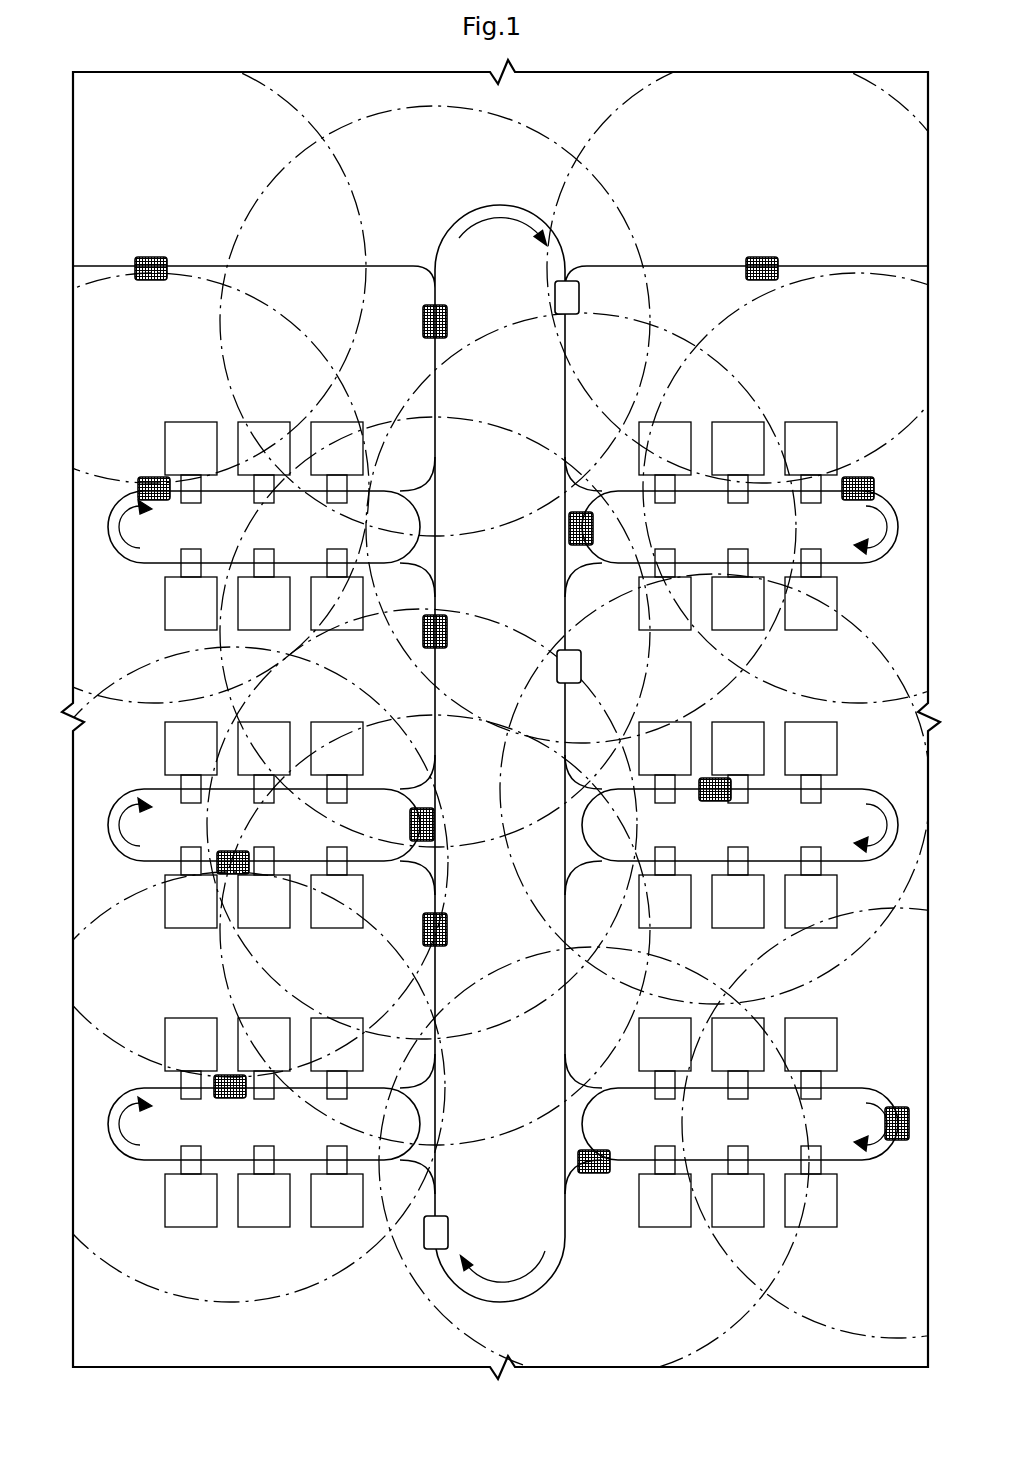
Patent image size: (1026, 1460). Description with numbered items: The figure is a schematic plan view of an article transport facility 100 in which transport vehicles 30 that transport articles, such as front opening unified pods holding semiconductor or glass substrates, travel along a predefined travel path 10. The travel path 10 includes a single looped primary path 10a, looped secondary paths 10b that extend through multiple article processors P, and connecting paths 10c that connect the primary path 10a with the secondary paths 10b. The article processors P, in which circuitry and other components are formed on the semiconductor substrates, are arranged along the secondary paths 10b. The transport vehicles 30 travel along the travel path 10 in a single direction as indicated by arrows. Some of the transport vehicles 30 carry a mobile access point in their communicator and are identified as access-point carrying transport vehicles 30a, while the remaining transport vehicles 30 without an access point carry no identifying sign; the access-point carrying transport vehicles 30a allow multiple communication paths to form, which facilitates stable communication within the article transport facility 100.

The article transport facility 100 is at (502, 722).
The travel path 10 is at (502, 722).
The primary path 10a is at (571, 217).
The secondary path 10b is at (130, 563).
The connecting path 10c is at (420, 485).
The transport vehicle 30 is at (580, 298).
The access-point carrying transport vehicle 30a is at (892, 1177).
The article processor P is at (330, 422).